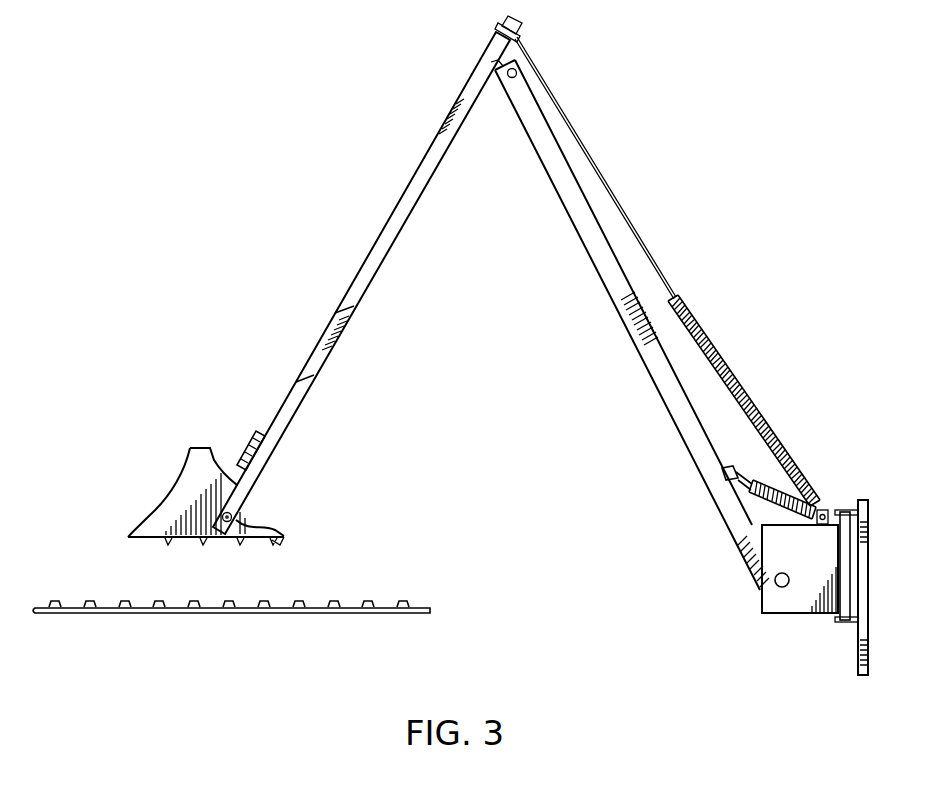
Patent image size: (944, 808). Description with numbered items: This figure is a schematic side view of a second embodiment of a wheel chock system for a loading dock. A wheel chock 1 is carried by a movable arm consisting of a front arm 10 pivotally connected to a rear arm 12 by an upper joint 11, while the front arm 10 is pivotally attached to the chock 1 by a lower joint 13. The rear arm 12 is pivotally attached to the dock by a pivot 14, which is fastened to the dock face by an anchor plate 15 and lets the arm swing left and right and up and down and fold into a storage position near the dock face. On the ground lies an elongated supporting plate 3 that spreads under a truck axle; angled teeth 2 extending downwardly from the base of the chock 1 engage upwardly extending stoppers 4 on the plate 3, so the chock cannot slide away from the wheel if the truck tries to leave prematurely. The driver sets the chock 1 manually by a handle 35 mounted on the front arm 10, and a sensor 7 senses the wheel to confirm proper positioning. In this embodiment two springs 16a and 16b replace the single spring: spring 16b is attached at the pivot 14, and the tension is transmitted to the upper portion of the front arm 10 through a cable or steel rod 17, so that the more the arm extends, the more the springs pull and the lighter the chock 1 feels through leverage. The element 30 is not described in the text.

The wheel chock 1 is at (172, 480).
The teeth 2 is at (170, 540).
The supporting plate 3 is at (285, 614).
The stoppers 4 is at (338, 603).
The sensor 7 is at (250, 433).
The front arm 10 is at (353, 317).
The upper joint 11 is at (508, 70).
The rear arm 12 is at (592, 160).
The lower joint 13 is at (238, 524).
The pivot 14 is at (800, 616).
The anchor plate 15 is at (868, 668).
The spring 16a is at (722, 358).
The spring 16b is at (790, 496).
The cable or steel rod 17 is at (628, 222).
The connector 30 is at (737, 476).
The handle 35 is at (305, 350).